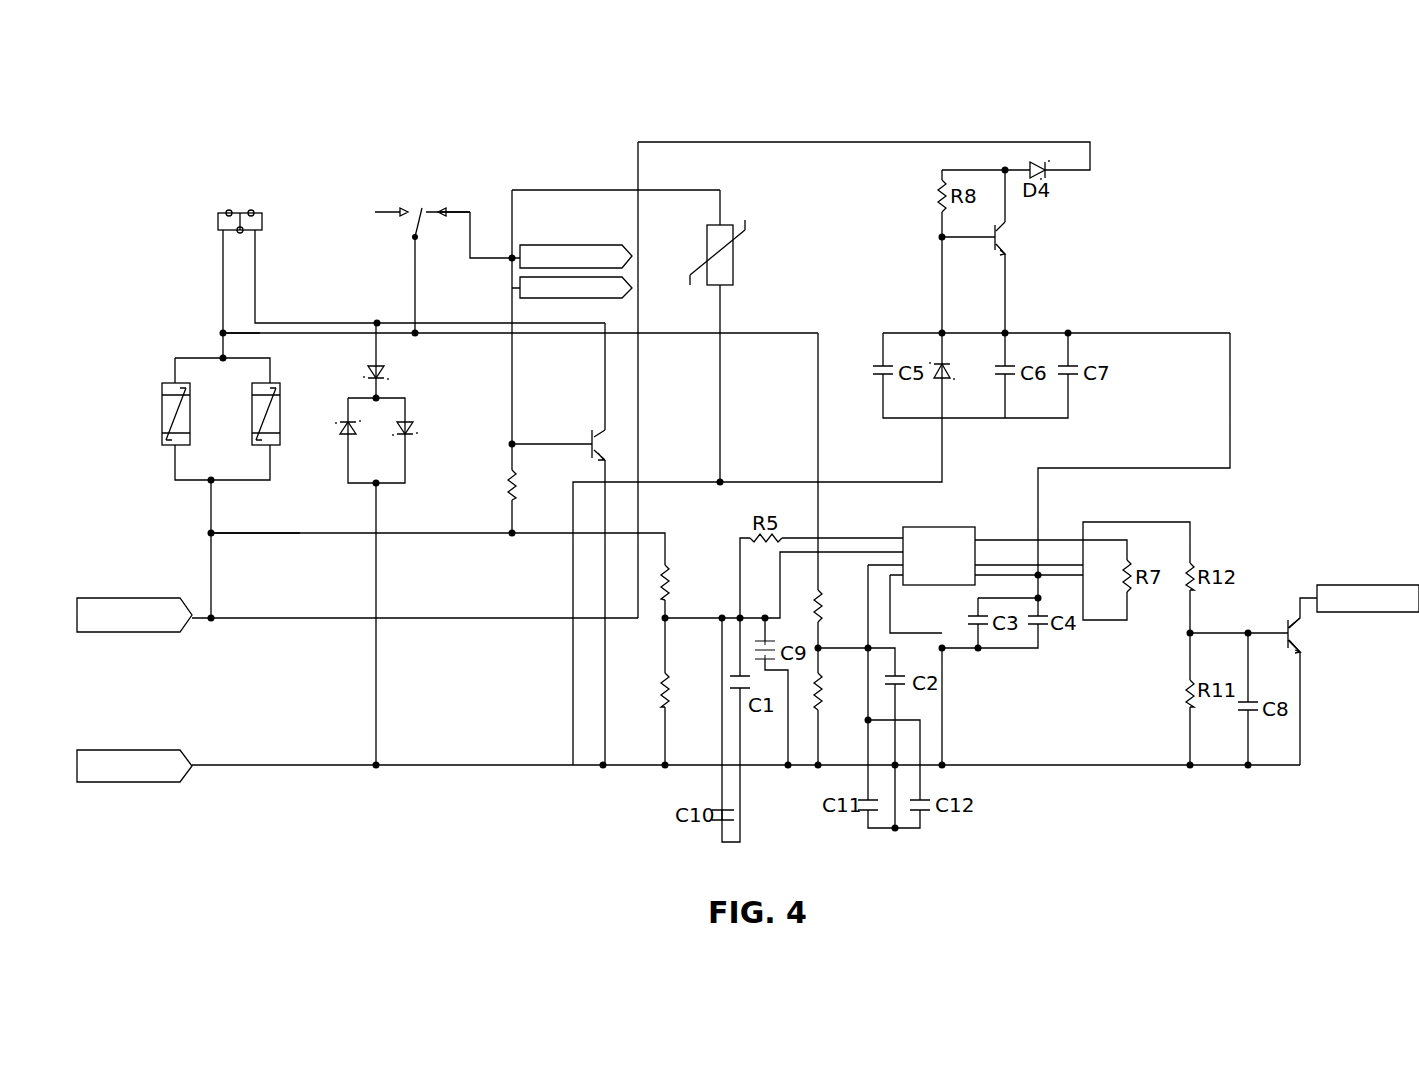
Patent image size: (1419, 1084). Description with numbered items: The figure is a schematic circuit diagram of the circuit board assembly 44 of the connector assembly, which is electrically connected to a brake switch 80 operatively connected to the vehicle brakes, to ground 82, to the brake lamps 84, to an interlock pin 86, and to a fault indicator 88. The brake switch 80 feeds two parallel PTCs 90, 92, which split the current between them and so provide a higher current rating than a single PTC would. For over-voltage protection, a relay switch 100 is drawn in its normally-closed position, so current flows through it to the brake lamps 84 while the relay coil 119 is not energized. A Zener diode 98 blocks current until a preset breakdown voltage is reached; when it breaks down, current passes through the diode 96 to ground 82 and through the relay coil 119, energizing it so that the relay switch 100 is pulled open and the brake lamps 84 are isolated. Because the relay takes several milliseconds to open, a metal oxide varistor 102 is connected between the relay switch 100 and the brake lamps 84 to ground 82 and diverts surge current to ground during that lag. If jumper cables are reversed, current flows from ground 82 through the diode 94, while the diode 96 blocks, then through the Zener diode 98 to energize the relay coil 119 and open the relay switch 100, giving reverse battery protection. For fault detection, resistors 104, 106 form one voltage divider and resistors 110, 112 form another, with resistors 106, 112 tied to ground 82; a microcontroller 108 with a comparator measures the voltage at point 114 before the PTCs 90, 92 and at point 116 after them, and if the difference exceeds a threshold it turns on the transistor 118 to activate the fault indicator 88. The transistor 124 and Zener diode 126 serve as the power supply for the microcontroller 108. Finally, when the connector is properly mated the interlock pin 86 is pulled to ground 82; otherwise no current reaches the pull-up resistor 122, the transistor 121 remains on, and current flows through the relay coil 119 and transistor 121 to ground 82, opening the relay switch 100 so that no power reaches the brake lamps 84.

The circuit board assembly 44 is at (278, 118).
The relay coil 119 is at (218, 222).
The point after the PTCs 116 is at (222, 345).
The relay switch 100 is at (413, 208).
The brake lamps 84 is at (608, 245).
The interlock pin 86 is at (578, 298).
The metal oxide varistor 102 is at (740, 265).
The transistor 124 is at (1030, 240).
The Zener diode 126 is at (952, 370).
The PTC 90 is at (162, 410).
The PTC 92 is at (280, 395).
The Zener diode 98 is at (386, 378).
The diode 94 is at (344, 436).
The diode 96 is at (408, 436).
The transistor 121 is at (590, 436).
The pull-up resistor 122 is at (508, 486).
The point before the PTCs 114 is at (210, 535).
The resistor 104 is at (670, 580).
The resistor 106 is at (660, 690).
The microcontroller 108 is at (908, 525).
The resistor 110 is at (822, 605).
The resistor 112 is at (824, 692).
The brake switch 80 is at (128, 632).
The ground 82 is at (130, 750).
The fault indicator 88 is at (1362, 585).
The transistor 118 is at (1322, 643).